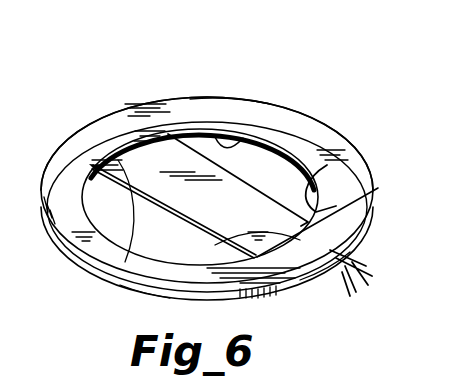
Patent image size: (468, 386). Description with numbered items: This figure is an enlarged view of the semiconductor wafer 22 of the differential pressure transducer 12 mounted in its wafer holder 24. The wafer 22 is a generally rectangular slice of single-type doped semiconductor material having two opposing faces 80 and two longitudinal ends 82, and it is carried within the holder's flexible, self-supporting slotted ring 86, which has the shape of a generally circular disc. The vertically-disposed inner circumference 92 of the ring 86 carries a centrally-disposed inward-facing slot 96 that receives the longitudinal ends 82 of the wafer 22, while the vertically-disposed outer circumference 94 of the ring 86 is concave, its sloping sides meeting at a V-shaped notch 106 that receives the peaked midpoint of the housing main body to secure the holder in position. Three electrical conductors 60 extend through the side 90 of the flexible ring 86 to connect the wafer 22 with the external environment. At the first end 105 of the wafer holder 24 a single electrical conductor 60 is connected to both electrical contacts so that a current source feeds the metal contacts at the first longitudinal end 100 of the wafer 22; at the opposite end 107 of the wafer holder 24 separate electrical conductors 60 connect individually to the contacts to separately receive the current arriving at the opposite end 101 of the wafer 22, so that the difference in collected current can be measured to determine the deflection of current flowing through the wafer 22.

The differential pressure transducer 12 is at (17, 0).
The semiconductor wafer 22 is at (236, 194).
The wafer holder 24 is at (234, 94).
The electrical conductors 60 is at (331, 285).
The opposing faces 80 is at (139, 138).
The longitudinal ends 82 is at (90, 297).
The flexible ring 86 is at (289, 110).
The side of the flexible ring 90 is at (38, 237).
The inner circumference 92 is at (327, 165).
The outer circumference 94 is at (277, 288).
The slot 96 is at (232, 163).
The first longitudinal end 100 is at (88, 303).
The opposite end 101 is at (206, 281).
The first end of the wafer holder 105 is at (172, 97).
The V-shaped notch 106 is at (140, 286).
The opposite end of the wafer holder 107 is at (344, 260).